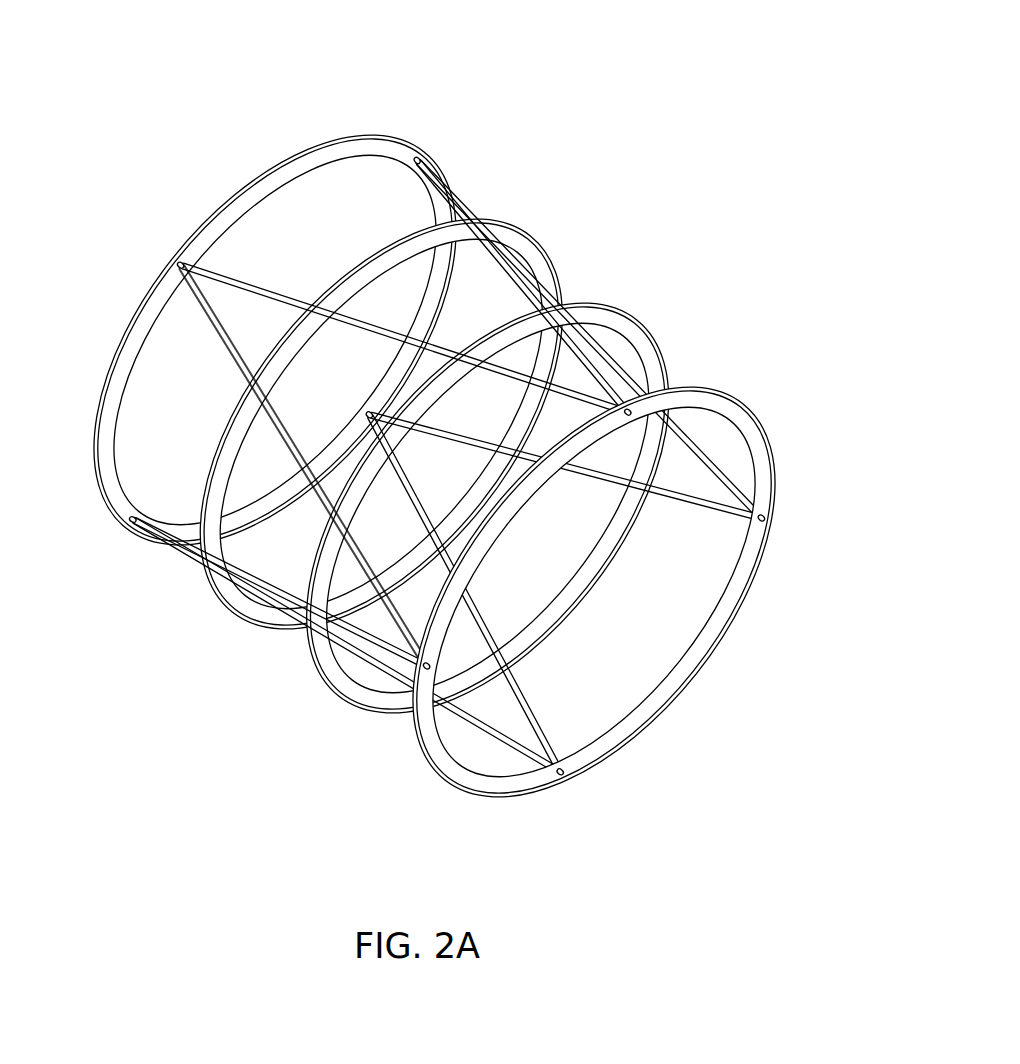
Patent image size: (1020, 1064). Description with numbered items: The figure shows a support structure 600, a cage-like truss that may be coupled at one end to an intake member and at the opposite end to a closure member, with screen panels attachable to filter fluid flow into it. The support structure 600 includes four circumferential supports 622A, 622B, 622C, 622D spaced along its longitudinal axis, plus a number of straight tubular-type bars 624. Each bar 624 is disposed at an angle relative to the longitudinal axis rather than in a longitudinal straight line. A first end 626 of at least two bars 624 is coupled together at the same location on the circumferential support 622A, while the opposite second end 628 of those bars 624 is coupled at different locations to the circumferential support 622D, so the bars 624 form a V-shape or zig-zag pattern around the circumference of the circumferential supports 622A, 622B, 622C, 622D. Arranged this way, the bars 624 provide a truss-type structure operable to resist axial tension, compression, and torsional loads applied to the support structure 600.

The support structure 600 is at (612, 58).
The circumferential support 622A is at (371, 134).
The circumferential support 622B is at (541, 246).
The circumferential support 622C is at (637, 321).
The circumferential support 622D is at (742, 406).
The bar 624 is at (228, 282).
The first end 626 is at (175, 267).
The second end 628 is at (626, 418).